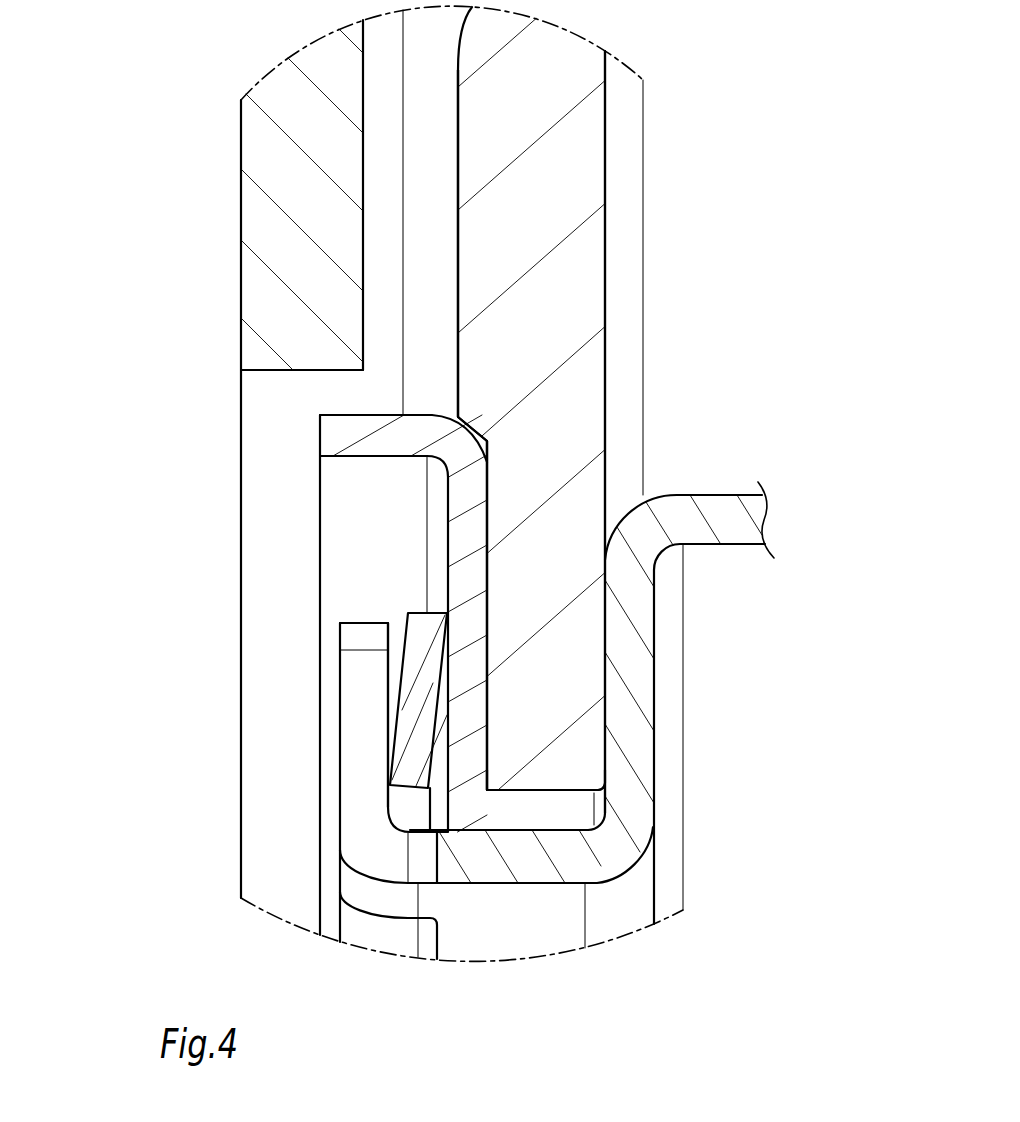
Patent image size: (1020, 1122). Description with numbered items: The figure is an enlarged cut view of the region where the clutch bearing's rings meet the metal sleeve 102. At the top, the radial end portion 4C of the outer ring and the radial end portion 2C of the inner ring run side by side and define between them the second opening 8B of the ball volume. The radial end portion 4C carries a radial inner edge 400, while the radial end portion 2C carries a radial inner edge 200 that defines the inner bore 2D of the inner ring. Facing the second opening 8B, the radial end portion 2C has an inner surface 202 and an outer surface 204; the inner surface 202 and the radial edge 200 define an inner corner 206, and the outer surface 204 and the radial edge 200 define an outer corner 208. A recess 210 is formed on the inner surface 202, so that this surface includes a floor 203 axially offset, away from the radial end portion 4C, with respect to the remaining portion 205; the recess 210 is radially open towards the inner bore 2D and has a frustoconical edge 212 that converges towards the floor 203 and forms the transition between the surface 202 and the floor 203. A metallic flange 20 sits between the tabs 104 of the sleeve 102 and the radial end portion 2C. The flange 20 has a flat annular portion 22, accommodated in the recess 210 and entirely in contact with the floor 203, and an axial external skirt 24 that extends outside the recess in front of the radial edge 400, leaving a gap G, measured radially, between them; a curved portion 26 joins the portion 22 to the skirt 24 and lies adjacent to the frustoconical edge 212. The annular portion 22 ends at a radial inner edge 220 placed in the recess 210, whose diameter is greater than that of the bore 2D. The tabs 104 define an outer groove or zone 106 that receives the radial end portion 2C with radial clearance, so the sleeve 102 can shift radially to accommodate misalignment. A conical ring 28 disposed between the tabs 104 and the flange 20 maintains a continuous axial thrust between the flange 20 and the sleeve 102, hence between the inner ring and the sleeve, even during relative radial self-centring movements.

The radial end portion 4C is at (265, 148).
The radial end portion 2C is at (540, 162).
The second opening 8B is at (385, 302).
The radial inner edge 400 is at (300, 372).
The gap G is at (355, 415).
The recess 210 is at (455, 413).
The outer surface 204 is at (608, 292).
The frustoconical edge 212 is at (478, 418).
The metal sleeve 102 is at (723, 507).
The inner surface 202 is at (455, 233).
The remaining portion 205 is at (292, 306).
The floor 203 is at (307, 615).
The metallic flange 20 is at (186, 573).
The axial external skirt 24 is at (337, 435).
The curved portion 26 is at (457, 443).
The flat annular portion 22 is at (468, 730).
The conical ring 28 is at (413, 772).
The tabs 104 is at (370, 837).
The radial inner edge 220 is at (460, 762).
The inner corner 206 is at (485, 792).
The radial inner edge 200 is at (540, 790).
The inner bore 2D is at (550, 923).
The outer groove or zone 106 is at (563, 807).
The outer corner 208 is at (608, 793).